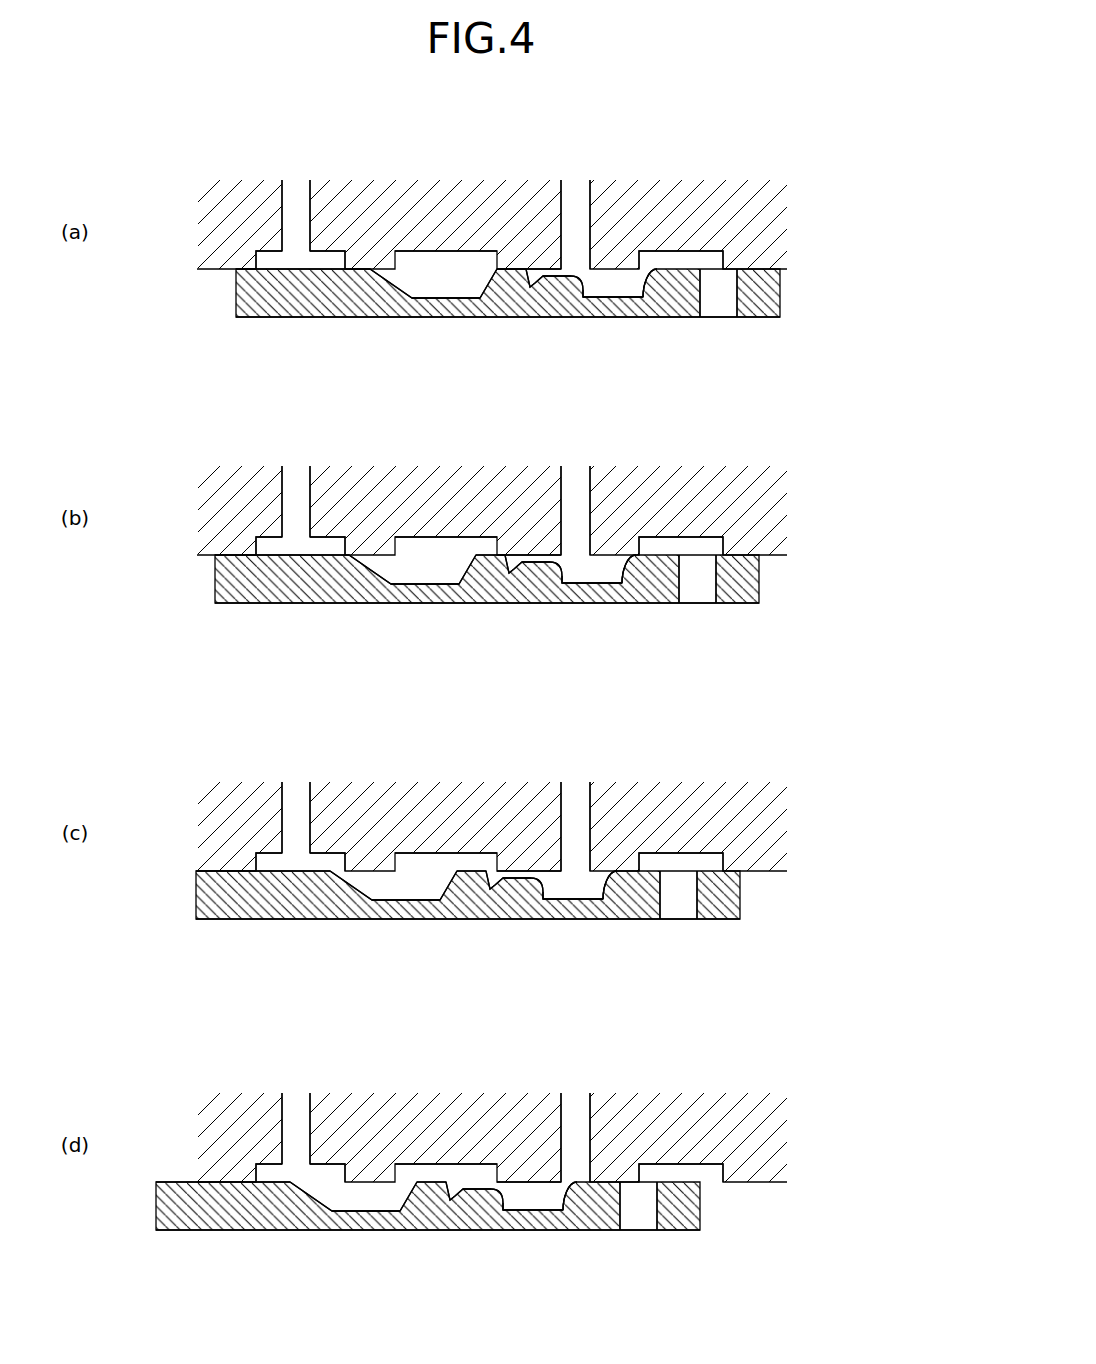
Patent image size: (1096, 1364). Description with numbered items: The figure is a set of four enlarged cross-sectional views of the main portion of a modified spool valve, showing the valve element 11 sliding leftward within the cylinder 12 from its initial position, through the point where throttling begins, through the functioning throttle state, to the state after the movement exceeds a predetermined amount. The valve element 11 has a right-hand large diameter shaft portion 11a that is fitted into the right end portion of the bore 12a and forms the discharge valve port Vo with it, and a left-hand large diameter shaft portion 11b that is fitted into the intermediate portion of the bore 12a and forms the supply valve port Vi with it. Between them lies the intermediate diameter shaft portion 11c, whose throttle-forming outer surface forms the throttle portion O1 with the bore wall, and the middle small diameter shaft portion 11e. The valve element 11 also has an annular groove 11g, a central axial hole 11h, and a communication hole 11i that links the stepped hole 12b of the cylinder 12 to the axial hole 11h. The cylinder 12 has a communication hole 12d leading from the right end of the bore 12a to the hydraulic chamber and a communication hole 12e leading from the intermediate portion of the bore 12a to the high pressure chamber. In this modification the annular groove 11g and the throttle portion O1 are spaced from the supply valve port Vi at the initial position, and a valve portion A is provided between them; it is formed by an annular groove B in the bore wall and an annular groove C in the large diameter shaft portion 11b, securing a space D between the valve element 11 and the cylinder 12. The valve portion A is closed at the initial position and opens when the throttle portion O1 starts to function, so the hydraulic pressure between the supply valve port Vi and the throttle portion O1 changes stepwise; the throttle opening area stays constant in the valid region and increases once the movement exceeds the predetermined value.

The valve element 11 is at (776, 292).
The cylinder 12 is at (783, 227).
The large diameter shaft portion 11a is at (658, 272).
The large diameter shaft portion 11b is at (268, 268).
The intermediate diameter shaft portion 11c is at (551, 276).
The small diameter shaft portion 11e is at (613, 297).
The annular groove 11g is at (530, 289).
The axial hole 11h is at (288, 318).
The communication hole 11i is at (718, 312).
The bore 12a is at (529, 268).
The stepped hole 12b is at (708, 250).
The communication hole 12d is at (577, 190).
The communication hole 12e is at (296, 190).
The valve portion A is at (513, 268).
The annular groove B is at (437, 253).
The annular groove C is at (438, 299).
The space D is at (453, 287).
The supply valve port Vi is at (345, 268).
The discharge valve port Vo is at (656, 292).
The throttle portion O1 is at (588, 299).